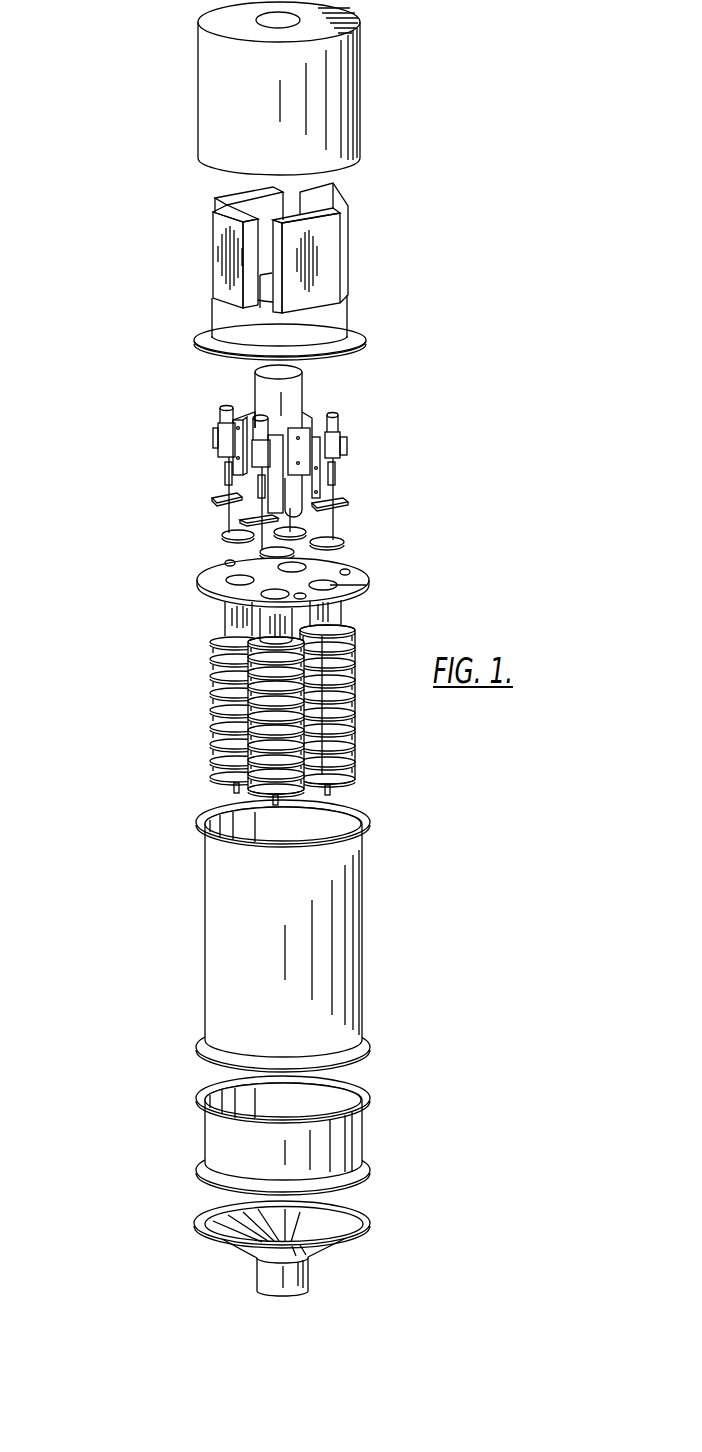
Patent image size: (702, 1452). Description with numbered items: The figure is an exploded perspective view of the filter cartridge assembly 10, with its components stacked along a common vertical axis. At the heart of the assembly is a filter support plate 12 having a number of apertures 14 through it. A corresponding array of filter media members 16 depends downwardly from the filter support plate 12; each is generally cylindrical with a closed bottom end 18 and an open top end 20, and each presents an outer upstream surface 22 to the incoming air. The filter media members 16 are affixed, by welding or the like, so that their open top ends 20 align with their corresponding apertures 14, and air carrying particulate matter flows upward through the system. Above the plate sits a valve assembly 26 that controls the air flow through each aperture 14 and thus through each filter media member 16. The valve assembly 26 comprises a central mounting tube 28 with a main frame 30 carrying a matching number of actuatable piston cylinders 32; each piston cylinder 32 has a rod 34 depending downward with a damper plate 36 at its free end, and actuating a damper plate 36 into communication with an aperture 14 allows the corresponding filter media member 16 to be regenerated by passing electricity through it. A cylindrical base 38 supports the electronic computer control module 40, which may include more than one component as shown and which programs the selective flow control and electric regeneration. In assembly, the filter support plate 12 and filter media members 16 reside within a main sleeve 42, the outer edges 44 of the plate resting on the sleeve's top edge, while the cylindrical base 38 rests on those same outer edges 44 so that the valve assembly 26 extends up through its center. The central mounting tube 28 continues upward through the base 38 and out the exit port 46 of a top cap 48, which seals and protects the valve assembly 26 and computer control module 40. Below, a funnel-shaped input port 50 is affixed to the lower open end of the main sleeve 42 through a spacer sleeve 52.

The filter cartridge assembly 10 is at (428, 590).
The filter support plate 12 is at (368, 583).
The apertures 14 is at (275, 597).
The filter media members 16 is at (304, 715).
The closed bottom end 18 is at (228, 778).
The open top end 20 is at (237, 580).
The outer upstream surface 22 is at (342, 715).
The valve assembly 26 is at (355, 460).
The central mounting tube 28 is at (300, 388).
The main frame 30 is at (235, 450).
The piston cylinders 32 is at (226, 408).
The rod 34 is at (330, 533).
The damper plate 36 is at (226, 533).
The cylindrical base 38 is at (332, 323).
The computer control module 40 is at (327, 235).
The main sleeve 42 is at (228, 945).
The outer edges 44 is at (345, 592).
The exit port 46 is at (280, 14).
The top cap 48 is at (218, 90).
The input port 50 is at (308, 1273).
The spacer sleeve 52 is at (342, 1147).